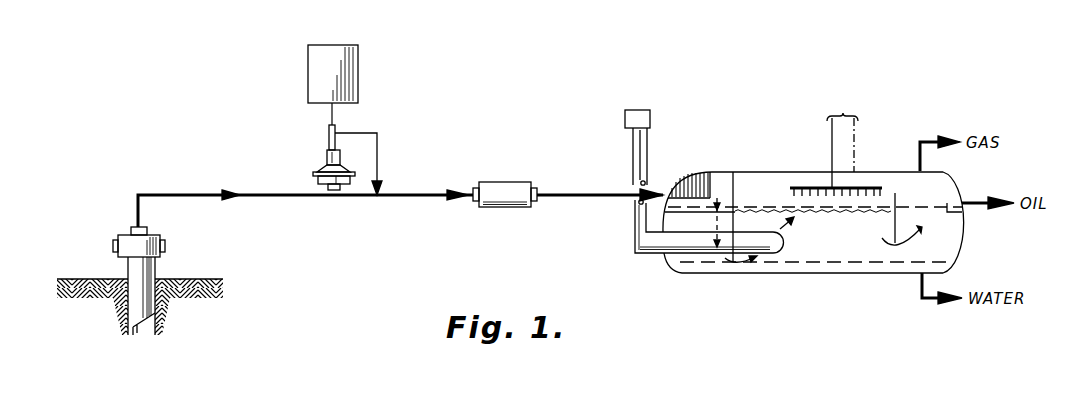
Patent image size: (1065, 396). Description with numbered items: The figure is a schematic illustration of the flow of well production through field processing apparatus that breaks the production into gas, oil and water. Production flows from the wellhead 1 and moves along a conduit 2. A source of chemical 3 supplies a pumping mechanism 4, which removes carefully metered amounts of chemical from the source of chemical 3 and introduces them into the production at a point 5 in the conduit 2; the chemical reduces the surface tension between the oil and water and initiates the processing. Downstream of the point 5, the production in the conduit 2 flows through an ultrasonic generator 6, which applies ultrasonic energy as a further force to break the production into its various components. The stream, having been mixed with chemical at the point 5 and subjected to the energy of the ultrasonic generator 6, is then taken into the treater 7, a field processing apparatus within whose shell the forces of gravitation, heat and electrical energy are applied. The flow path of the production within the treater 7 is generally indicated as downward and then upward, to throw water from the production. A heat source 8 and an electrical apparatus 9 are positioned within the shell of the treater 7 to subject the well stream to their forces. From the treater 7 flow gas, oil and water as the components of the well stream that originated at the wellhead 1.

The wellhead 1 is at (124, 233).
The conduit 2 is at (165, 197).
The source of chemical 3 is at (358, 68).
The pumping mechanism 4 is at (329, 137).
The point 5 is at (381, 193).
The ultrasonic generator 6 is at (505, 208).
The treater 7 is at (733, 172).
The heat source 8 is at (685, 243).
The electrical apparatus 9 is at (812, 188).